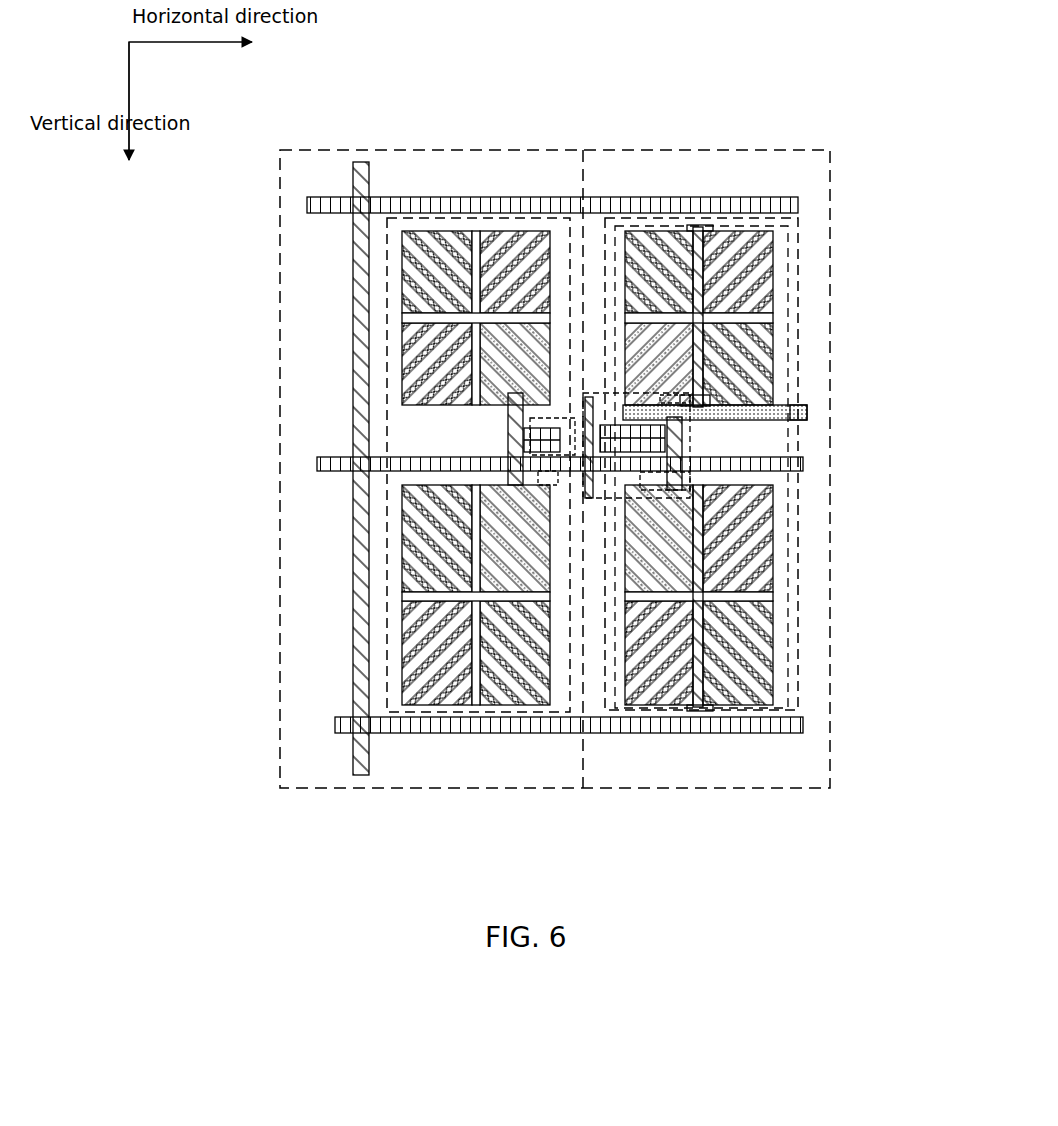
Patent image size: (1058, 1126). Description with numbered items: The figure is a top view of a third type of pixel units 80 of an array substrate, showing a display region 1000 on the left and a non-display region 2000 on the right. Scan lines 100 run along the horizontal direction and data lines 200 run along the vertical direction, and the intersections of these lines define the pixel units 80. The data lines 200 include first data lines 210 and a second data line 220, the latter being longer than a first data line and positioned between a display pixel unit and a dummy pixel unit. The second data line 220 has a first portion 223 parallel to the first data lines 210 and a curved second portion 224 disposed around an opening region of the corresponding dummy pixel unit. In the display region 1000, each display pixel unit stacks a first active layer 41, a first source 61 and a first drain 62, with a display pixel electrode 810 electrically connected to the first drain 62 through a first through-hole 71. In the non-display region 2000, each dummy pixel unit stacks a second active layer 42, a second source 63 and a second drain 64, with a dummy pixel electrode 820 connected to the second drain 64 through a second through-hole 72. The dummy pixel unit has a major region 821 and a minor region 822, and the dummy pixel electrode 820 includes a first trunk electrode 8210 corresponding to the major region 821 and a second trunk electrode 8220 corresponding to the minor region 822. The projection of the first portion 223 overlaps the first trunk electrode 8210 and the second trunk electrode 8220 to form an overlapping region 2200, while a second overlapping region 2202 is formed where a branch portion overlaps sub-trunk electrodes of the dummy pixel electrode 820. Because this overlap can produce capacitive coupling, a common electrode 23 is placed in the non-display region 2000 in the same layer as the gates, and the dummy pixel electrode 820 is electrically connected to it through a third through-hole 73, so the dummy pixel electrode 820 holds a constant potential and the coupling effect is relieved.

The display region 1000 is at (282, 150).
The non-display region 2000 is at (822, 150).
The scan lines 100 is at (609, 464).
The data lines 200 is at (533, 387).
The first data lines 210 is at (366, 167).
The second data line 220 is at (645, 266).
The second portion 224 is at (595, 390).
The first portion 223 is at (700, 227).
The pixel units 80 is at (580, 554).
The display pixel electrode 810 is at (570, 712).
The dummy pixel electrode 820 is at (606, 713).
The first trunk electrode 8210 is at (698, 227).
The second trunk electrode 8220 is at (697, 708).
The overlapping region 2200 is at (714, 226).
The second overlapping region 2202 is at (710, 707).
The minor region 822 is at (792, 709).
The major region 821 is at (796, 417).
The common electrode 23 is at (808, 412).
The second through-hole 72 is at (684, 406).
The third through-hole 73 is at (705, 398).
The first through-hole 71 is at (515, 398).
The first active layer 41 is at (520, 426).
The second active layer 42 is at (670, 440).
The first source 61 is at (545, 441).
The first drain 62 is at (545, 478).
The second source 63 is at (672, 452).
The second drain 64 is at (675, 466).